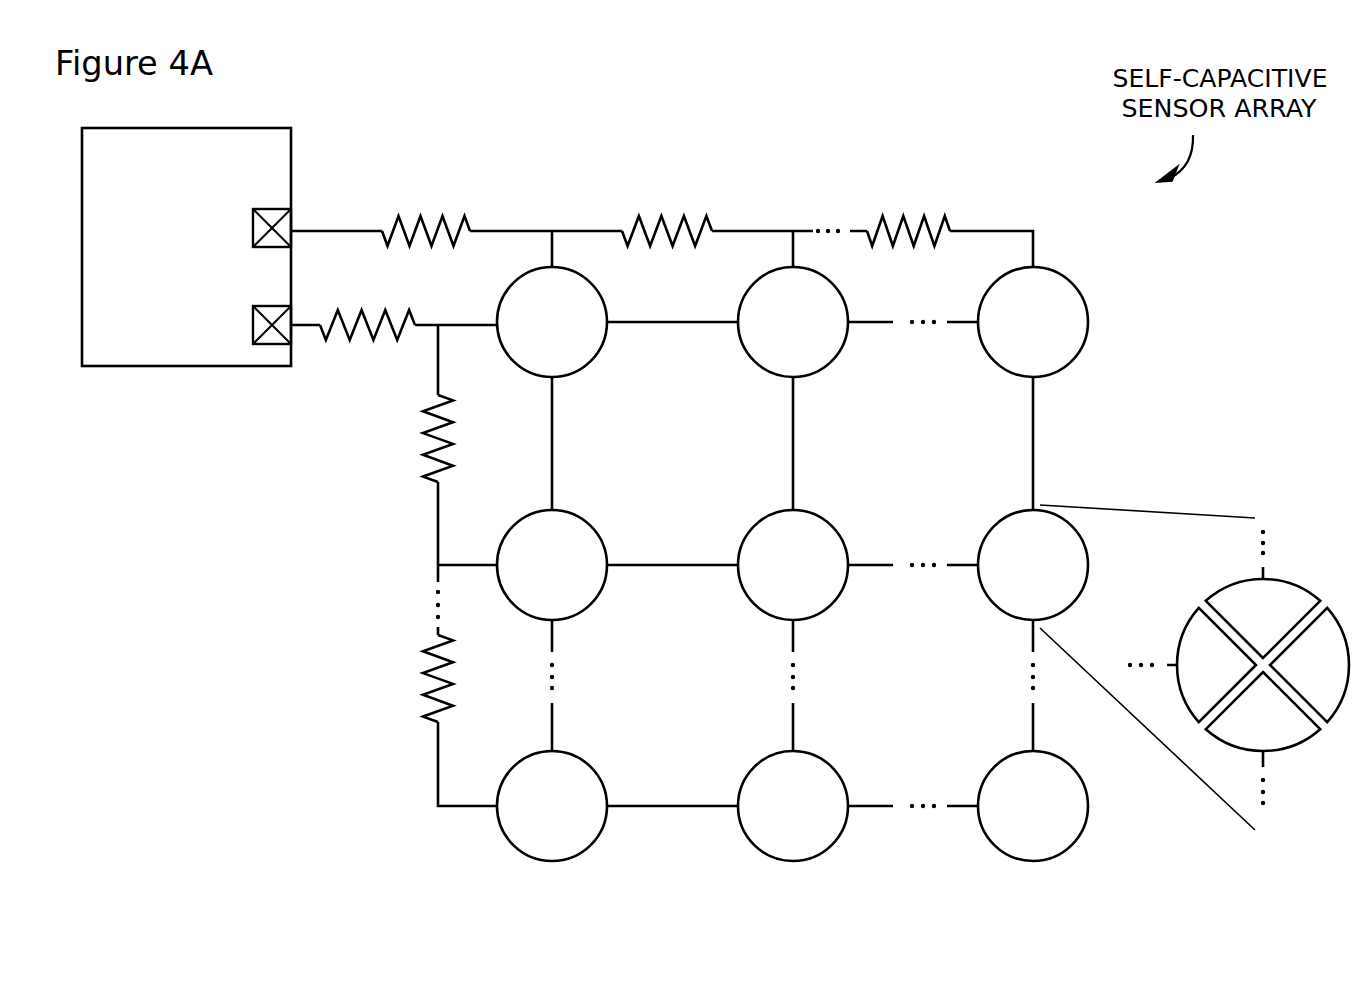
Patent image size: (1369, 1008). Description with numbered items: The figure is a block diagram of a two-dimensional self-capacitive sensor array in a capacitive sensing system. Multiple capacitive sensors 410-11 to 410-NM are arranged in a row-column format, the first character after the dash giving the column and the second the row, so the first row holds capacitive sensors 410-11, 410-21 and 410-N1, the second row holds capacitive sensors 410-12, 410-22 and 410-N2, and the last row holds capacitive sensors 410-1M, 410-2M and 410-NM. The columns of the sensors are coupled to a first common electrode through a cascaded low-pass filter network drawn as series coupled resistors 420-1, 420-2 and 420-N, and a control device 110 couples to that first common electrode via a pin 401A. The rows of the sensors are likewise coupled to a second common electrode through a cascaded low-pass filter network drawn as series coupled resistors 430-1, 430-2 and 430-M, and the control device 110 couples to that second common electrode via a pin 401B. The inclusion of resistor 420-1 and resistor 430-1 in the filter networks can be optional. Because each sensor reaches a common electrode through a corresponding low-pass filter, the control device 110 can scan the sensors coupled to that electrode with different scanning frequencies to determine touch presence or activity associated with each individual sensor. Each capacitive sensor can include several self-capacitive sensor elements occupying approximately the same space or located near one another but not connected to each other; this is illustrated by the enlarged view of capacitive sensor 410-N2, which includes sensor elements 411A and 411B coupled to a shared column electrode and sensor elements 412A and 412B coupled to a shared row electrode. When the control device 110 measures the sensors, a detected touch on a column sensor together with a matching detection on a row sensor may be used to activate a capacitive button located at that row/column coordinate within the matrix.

The control device 110 is at (215, 199).
The pin 401A is at (249, 235).
The pin 401B is at (249, 327).
The resistor 420-1 is at (467, 220).
The resistor 420-2 is at (705, 220).
The resistor 420-N is at (948, 220).
The resistor 430-1 is at (372, 340).
The resistor 430-2 is at (430, 480).
The resistor 430-M is at (430, 720).
The capacitive sensor 410-11 is at (592, 338).
The capacitive sensor 410-21 is at (832, 338).
The capacitive sensor 410-N1 is at (992, 338).
The capacitive sensor 410-12 is at (592, 581).
The capacitive sensor 410-22 is at (832, 581).
The capacitive sensor 410-N2 is at (992, 581).
The capacitive sensor 410-1M is at (594, 822).
The capacitive sensor 410-2M is at (835, 822).
The capacitive sensor 410-NM is at (1077, 822).
The sensor element 411A is at (1234, 617).
The sensor element 411B is at (1234, 742).
The sensor element 412A is at (1179, 678).
The sensor element 412B is at (1289, 678).